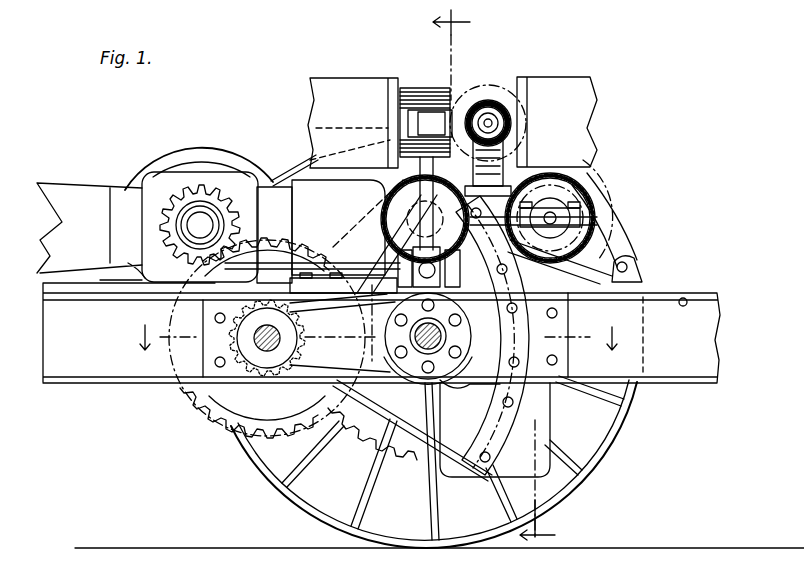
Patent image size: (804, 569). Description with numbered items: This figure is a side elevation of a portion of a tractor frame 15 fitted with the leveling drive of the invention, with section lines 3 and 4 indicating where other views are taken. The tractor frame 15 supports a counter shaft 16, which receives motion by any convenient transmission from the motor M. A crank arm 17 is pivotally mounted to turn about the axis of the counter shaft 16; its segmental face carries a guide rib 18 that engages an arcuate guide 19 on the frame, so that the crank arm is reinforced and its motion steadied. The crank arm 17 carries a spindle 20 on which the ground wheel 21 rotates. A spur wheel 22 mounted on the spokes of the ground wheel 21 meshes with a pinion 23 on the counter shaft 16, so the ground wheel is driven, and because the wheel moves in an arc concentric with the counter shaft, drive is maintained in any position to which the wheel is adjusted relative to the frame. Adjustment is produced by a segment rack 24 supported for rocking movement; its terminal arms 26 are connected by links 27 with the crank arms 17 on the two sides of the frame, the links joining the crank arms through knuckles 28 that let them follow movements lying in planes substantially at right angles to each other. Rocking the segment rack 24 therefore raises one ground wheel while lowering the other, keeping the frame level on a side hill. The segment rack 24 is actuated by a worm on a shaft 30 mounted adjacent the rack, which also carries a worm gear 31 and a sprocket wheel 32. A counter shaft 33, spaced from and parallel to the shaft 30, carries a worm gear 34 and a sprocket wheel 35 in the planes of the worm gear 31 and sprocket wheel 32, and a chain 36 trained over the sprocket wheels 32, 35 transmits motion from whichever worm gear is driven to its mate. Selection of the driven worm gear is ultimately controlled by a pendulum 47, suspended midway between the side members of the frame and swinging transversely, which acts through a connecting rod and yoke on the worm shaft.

The motor M is at (217, 220).
The tractor frame 15 is at (113, 370).
The counter shaft 16 is at (267, 353).
The crank arm 17 is at (342, 328).
The guide rib 18 is at (385, 328).
The arcuate guide 19 is at (528, 413).
The spindle 20 is at (441, 351).
The ground wheel 21 is at (603, 457).
The spur wheel 22 is at (378, 462).
The pinion 23 is at (178, 350).
The segment rack 24 is at (440, 102).
The terminal arm 26 is at (432, 118).
The link 27 is at (353, 123).
The knuckle 28 is at (395, 222).
The shaft 30 is at (382, 203).
The worm gear 31 is at (350, 154).
The sprocket wheel 32 is at (400, 127).
The counter shaft 33 is at (597, 210).
The worm gear 34 is at (565, 192).
The sprocket wheel 35 is at (600, 222).
The chain 36 is at (538, 163).
The pendulum 47 is at (429, 430).
The section line 3- 3 is at (503, 279).
The section line 4- 4 is at (363, 329).